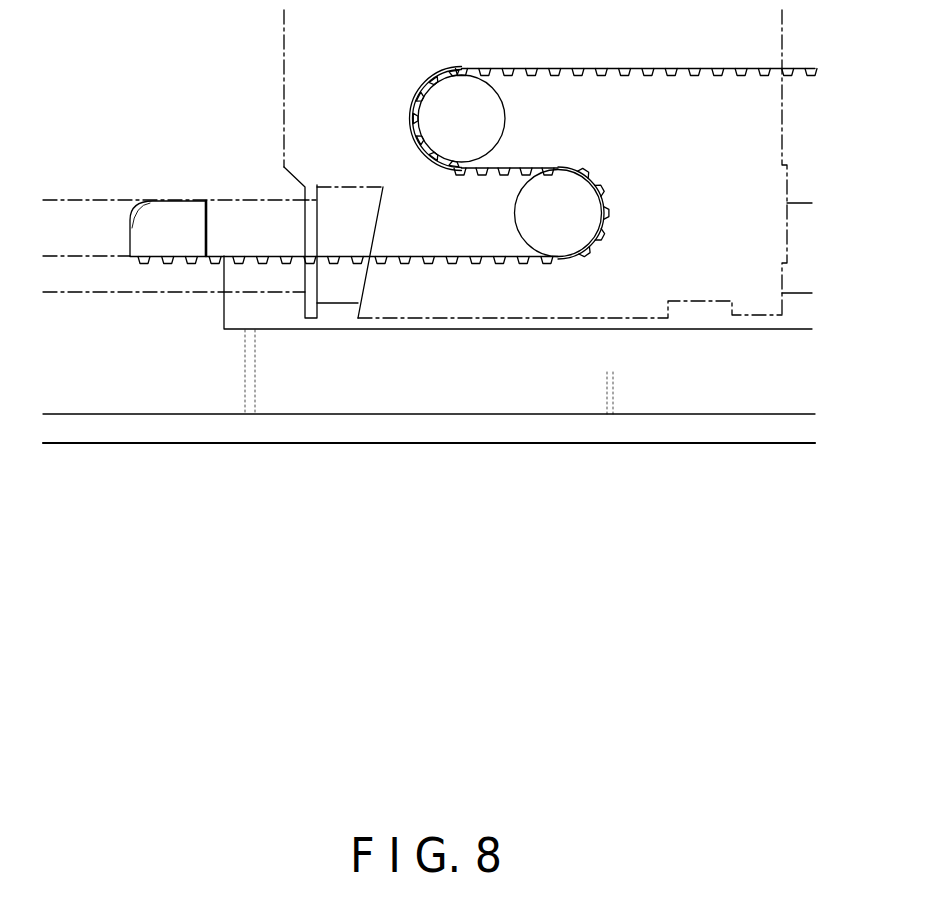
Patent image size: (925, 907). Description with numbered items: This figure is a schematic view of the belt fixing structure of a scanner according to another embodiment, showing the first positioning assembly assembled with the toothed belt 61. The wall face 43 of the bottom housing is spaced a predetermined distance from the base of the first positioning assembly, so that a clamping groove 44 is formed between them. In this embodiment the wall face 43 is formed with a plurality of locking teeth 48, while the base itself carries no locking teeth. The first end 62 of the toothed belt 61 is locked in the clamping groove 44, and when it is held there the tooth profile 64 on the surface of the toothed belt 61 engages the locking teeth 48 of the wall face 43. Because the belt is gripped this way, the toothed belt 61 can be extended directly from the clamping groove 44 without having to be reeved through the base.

The wall face 43 is at (194, 280).
The clamping groove 44 is at (130, 256).
The locking teeth 48 is at (158, 257).
The toothed belt 61 is at (335, 258).
The first end 62 is at (137, 257).
The tooth profile 64 is at (167, 256).